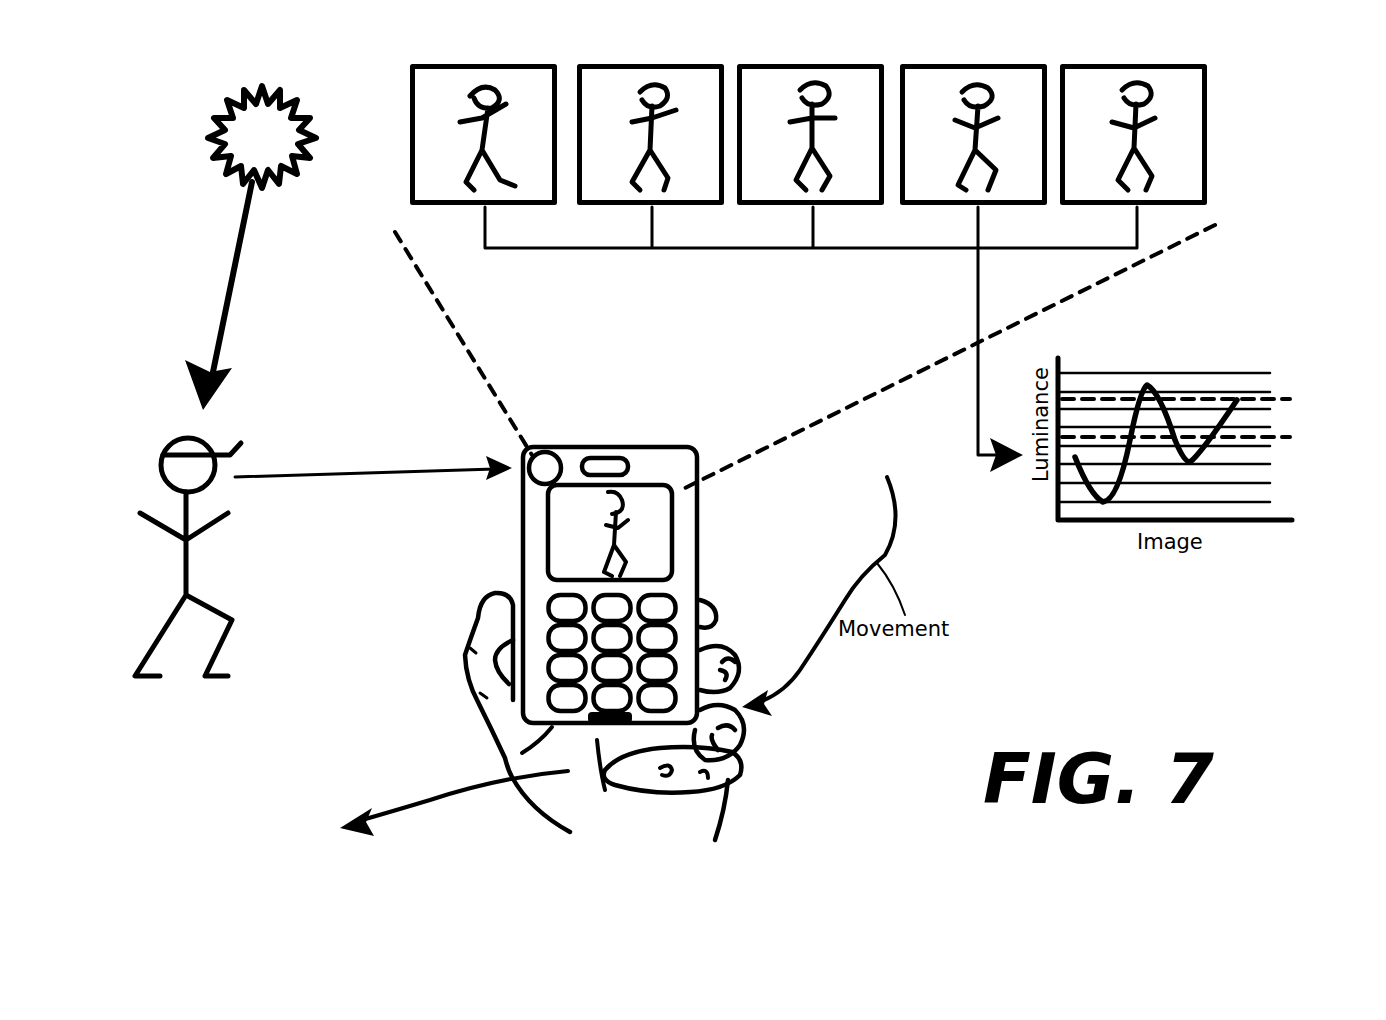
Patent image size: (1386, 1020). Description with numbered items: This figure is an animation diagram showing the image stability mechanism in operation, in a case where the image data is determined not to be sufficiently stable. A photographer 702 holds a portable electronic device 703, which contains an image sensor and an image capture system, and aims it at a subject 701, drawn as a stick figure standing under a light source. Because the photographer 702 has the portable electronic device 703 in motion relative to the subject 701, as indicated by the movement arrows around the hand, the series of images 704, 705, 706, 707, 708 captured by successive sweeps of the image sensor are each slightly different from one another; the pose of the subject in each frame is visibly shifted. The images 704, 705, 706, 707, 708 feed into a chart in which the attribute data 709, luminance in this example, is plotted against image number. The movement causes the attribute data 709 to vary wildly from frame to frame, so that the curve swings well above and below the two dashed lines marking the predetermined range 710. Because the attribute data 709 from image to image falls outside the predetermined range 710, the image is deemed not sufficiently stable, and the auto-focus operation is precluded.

The subject 701 is at (238, 621).
The photographer 702 is at (735, 776).
The portable electronic device 703 is at (645, 447).
The image 704 is at (503, 63).
The image 705 is at (670, 63).
The image 706 is at (818, 63).
The image 707 is at (965, 63).
The image 708 is at (1122, 63).
The attribute data 709 is at (1145, 384).
The predetermined range 710 is at (1296, 399).